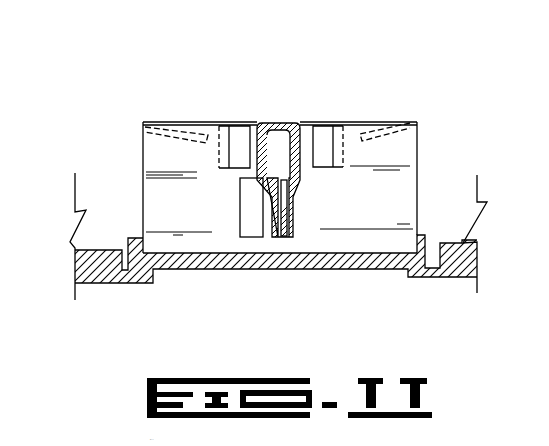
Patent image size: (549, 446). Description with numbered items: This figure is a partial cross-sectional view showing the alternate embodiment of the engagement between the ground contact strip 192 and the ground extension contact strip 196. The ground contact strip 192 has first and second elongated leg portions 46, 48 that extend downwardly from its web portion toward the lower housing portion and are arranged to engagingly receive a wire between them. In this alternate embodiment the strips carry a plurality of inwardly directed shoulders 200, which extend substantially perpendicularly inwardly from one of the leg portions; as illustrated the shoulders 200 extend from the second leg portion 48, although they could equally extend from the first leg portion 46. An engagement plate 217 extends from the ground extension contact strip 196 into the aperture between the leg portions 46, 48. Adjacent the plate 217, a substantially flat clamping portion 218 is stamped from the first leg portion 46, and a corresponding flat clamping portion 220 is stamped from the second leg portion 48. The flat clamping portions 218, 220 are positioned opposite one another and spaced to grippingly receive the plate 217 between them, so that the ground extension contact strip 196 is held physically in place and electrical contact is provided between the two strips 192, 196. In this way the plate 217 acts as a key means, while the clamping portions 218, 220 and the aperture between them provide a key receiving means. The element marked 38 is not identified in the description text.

The flap 38 is at (205, 128).
The first elongated leg portion 46 is at (258, 150).
The second elongated leg portion 48 is at (299, 147).
The ground contact strip 192 is at (283, 105).
The ground extension contact strip 196 is at (422, 114).
The inwardly directed shoulders 200 is at (224, 128).
The engagement plate 217 is at (282, 226).
The flat clamping portion 218 is at (277, 208).
The flat clamping portion 220 is at (294, 208).